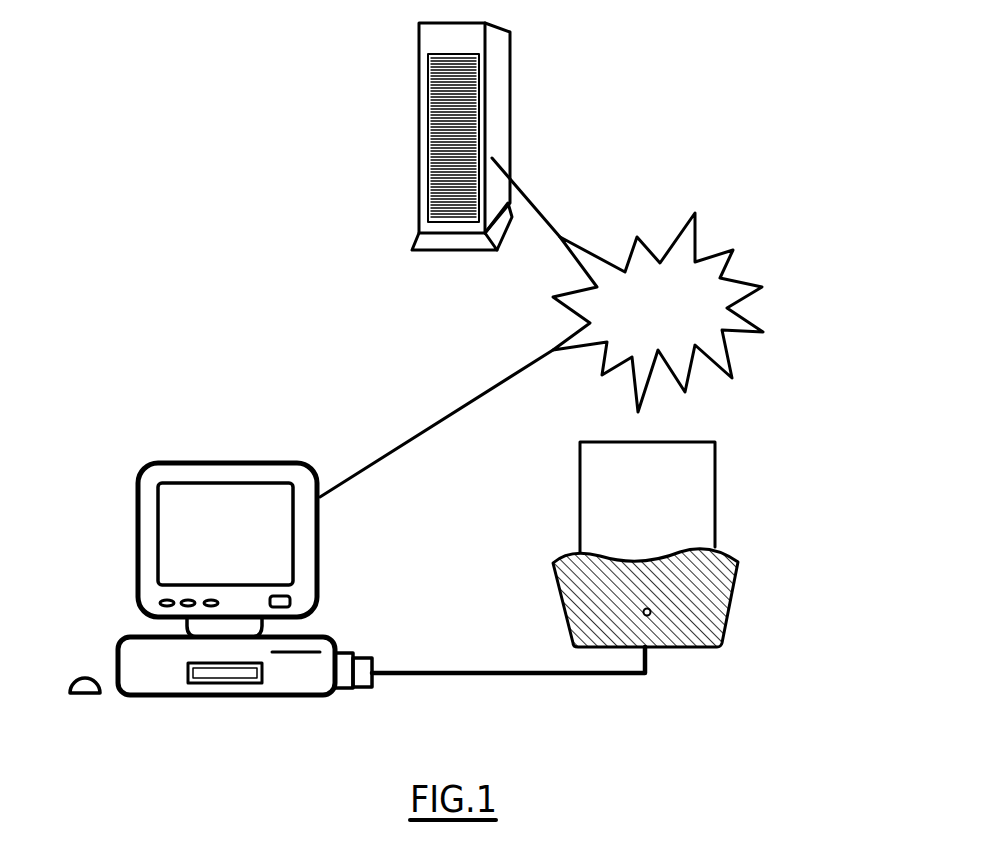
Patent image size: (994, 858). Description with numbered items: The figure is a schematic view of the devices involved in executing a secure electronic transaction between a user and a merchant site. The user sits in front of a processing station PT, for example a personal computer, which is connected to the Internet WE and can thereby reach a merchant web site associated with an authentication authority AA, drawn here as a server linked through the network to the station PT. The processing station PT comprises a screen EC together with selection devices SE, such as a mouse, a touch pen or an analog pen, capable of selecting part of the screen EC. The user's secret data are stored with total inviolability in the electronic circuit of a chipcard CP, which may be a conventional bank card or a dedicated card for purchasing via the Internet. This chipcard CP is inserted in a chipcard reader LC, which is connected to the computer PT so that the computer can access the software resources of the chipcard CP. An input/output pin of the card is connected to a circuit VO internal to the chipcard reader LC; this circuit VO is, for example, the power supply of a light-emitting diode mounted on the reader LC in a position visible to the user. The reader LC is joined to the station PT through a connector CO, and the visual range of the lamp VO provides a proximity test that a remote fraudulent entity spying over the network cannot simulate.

The authentication authority AA is at (510, 125).
The Internet WE is at (738, 248).
The processing station PT is at (270, 463).
The screen EC is at (185, 547).
The selection devices SE is at (84, 680).
The connector CO is at (364, 656).
The chipcard CP is at (717, 461).
The circuit VO is at (650, 610).
The chipcard reader LC is at (728, 615).